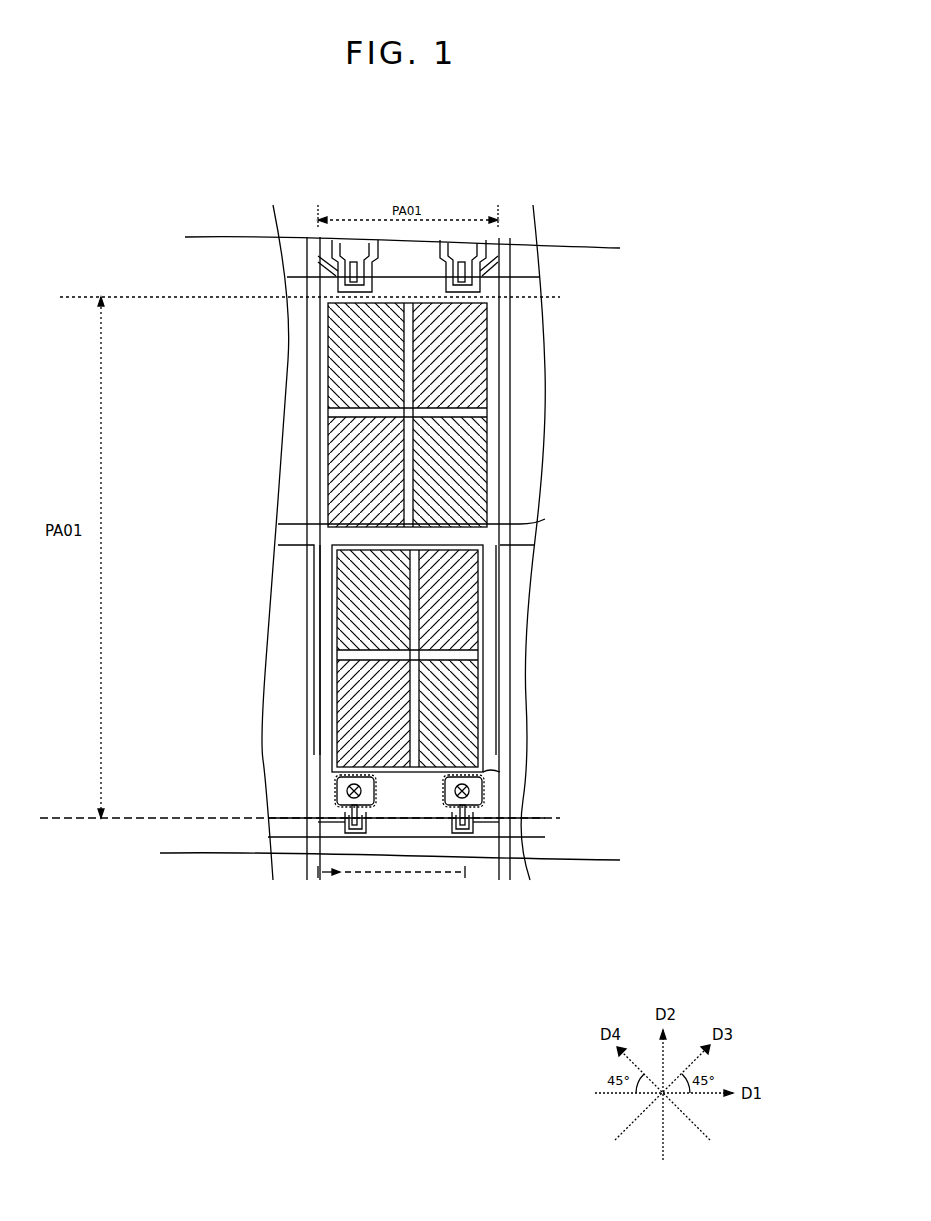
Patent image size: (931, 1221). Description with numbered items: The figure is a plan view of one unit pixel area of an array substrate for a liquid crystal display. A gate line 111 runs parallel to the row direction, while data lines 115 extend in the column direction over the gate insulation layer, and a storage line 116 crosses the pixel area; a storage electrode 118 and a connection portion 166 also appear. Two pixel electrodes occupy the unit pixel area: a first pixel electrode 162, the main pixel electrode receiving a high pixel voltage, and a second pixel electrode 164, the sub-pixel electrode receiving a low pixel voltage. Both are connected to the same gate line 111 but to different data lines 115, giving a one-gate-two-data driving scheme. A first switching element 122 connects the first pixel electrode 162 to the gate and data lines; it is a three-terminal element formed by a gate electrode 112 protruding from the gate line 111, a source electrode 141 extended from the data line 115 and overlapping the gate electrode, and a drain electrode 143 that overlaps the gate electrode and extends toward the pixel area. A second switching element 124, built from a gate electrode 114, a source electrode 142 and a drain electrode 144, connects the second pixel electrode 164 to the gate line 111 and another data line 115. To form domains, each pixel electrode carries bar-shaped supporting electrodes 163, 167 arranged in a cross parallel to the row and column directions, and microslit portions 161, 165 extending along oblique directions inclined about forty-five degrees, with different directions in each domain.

The gate line 111 is at (526, 848).
The gate electrode 112 is at (482, 824).
The gate electrode 114 is at (345, 815).
The data line 115 is at (502, 462).
The storage line 116 is at (545, 519).
The storage electrode 118 is at (310, 607).
The first switching element 122 is at (447, 858).
The second switching element 124 is at (248, 786).
The source electrode 141 is at (466, 808).
The source electrode 142 is at (342, 832).
The drain electrode 143 is at (444, 805).
The drain electrode 144 is at (340, 793).
The microslit portion 161 is at (455, 632).
The first pixel electrode 162 is at (519, 658).
The supporting electrode 163 is at (455, 648).
The second pixel electrode 164 is at (519, 415).
The microslit portion 165 is at (466, 375).
The connection portion 166 is at (500, 772).
The supporting electrode 167 is at (470, 410).